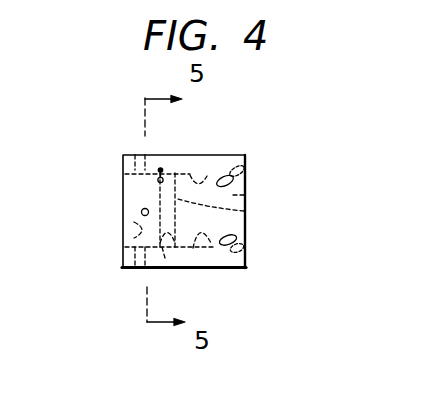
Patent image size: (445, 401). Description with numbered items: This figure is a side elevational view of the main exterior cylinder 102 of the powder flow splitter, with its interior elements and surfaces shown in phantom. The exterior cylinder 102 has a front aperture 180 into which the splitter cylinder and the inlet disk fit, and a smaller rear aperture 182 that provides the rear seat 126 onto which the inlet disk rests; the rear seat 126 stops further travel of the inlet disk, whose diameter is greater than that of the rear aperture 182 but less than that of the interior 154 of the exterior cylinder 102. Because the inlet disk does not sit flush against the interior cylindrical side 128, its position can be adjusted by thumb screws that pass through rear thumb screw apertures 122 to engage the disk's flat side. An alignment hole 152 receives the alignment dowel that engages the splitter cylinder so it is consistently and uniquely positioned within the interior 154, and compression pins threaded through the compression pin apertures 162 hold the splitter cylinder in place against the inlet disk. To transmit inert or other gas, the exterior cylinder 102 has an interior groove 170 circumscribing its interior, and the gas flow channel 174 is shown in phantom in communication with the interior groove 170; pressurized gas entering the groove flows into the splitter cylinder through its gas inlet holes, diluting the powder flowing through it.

The exterior cylinder 102 is at (123, 268).
The rear thumb screw aperture 122 is at (142, 209).
The rear seat 126 is at (122, 173).
The interior cylindrical side 128 is at (215, 184).
The alignment hole 152 is at (161, 169).
The interior 154 is at (244, 197).
The compression pin aperture 162 is at (246, 168).
The interior groove 170 is at (244, 211).
The gas flow channel 174 is at (165, 258).
The front aperture 180 is at (246, 229).
The rear aperture 182 is at (122, 234).